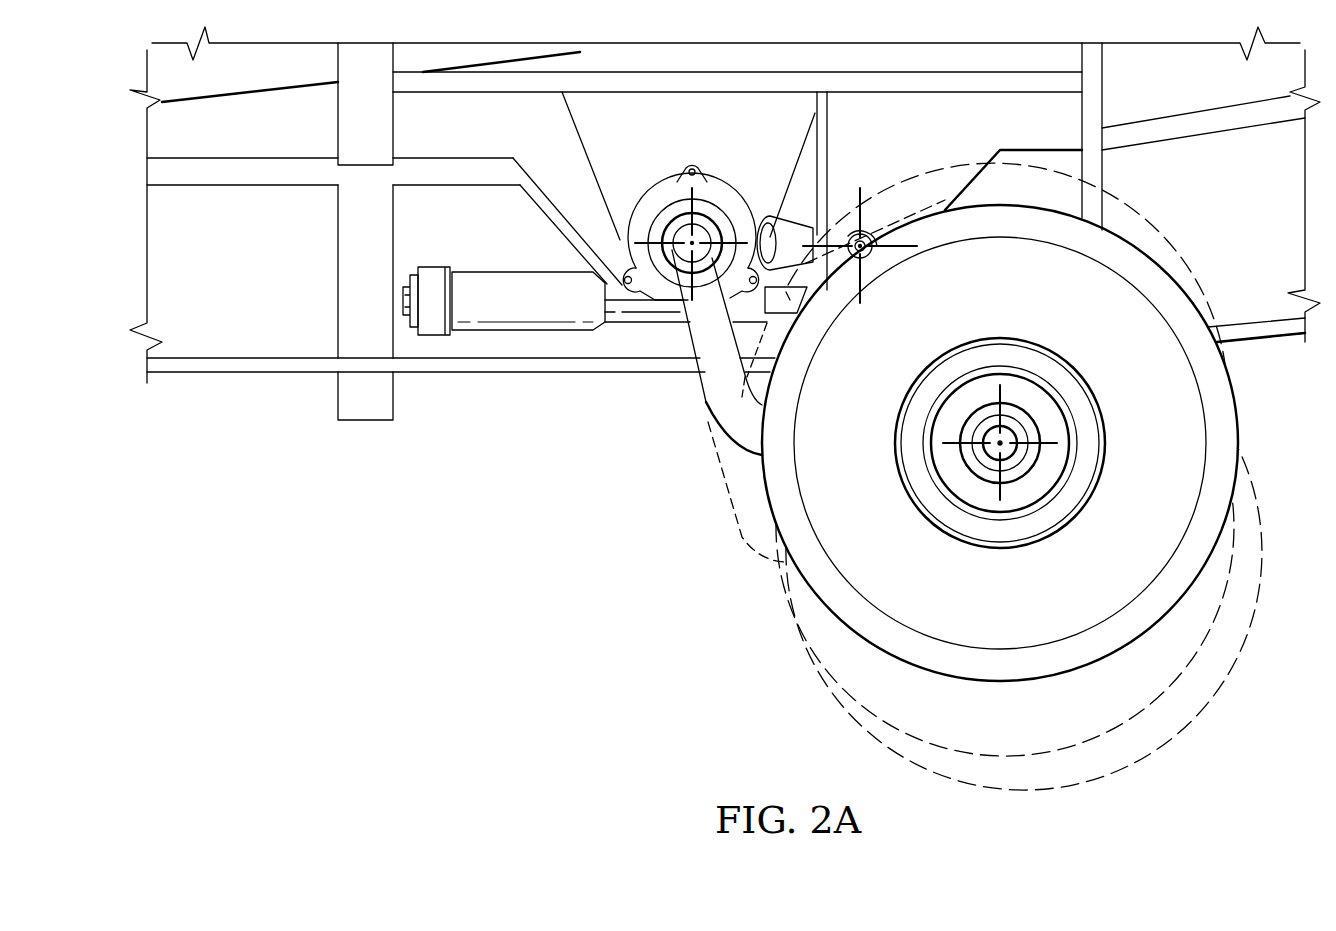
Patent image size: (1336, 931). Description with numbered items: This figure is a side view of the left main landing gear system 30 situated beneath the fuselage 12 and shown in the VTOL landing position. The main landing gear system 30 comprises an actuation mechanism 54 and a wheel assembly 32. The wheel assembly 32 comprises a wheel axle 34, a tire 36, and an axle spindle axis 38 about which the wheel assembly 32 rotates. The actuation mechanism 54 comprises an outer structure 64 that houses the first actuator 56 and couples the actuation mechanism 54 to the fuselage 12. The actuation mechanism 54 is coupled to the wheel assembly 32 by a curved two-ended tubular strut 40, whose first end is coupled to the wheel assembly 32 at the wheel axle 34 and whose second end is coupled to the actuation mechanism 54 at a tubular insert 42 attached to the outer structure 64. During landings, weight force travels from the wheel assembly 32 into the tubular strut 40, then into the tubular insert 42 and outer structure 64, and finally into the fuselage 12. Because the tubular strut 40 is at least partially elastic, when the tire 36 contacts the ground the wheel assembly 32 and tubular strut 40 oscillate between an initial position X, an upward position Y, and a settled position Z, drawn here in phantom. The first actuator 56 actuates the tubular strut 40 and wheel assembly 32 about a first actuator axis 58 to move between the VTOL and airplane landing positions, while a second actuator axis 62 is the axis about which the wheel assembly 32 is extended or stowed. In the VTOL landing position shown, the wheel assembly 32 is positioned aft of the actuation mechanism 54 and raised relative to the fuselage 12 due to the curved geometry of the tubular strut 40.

The fuselage 12 is at (160, 241).
The main landing gear system 30 is at (1027, 476).
The wheel assembly 32 is at (1062, 443).
The wheel axle 34 is at (1010, 358).
The tire 36 is at (1236, 392).
The axle spindle axis 38 is at (1005, 440).
The tubular strut 40 is at (702, 397).
The tubular insert 42 is at (665, 190).
The actuation mechanism 54 is at (1148, 186).
The first actuator 56 is at (487, 272).
The first actuator axis 58 is at (720, 215).
The second actuator axis 62 is at (873, 220).
The outer structure 64 is at (733, 82).
The initial position X is at (855, 733).
The upward position Y is at (1167, 232).
The settled position Z is at (807, 603).